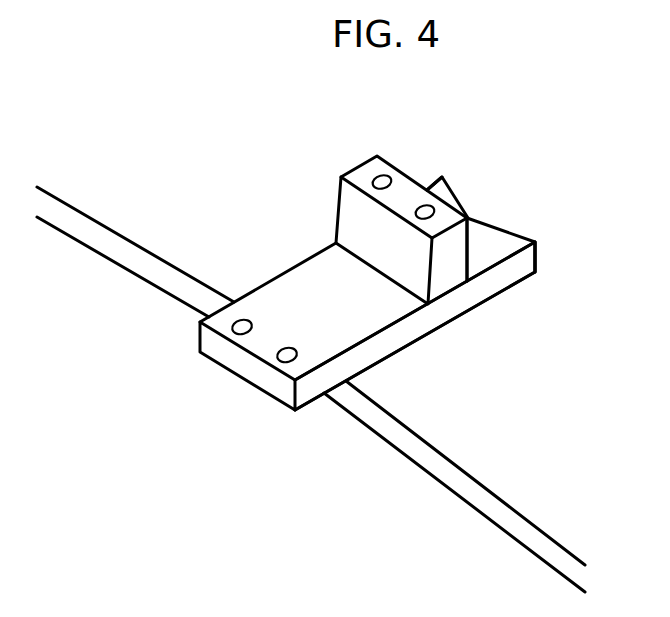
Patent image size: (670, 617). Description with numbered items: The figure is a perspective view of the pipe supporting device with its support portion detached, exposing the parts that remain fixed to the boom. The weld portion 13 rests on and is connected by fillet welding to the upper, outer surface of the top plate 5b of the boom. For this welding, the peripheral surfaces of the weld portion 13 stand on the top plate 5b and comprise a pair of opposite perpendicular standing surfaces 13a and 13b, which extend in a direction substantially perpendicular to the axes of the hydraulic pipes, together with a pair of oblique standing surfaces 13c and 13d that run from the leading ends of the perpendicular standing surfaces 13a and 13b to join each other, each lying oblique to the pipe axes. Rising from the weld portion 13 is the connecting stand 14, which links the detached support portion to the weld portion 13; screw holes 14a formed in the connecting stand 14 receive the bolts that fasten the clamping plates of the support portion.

The top plate 5b is at (99, 237).
The weld portion 13 is at (233, 371).
The perpendicular standing surface 13a is at (429, 184).
The perpendicular standing surface 13b is at (470, 298).
The oblique standing surface 13c is at (449, 189).
The oblique standing surface 13d is at (513, 234).
The connecting stand 14 is at (367, 170).
The screw hole 14a is at (372, 184).